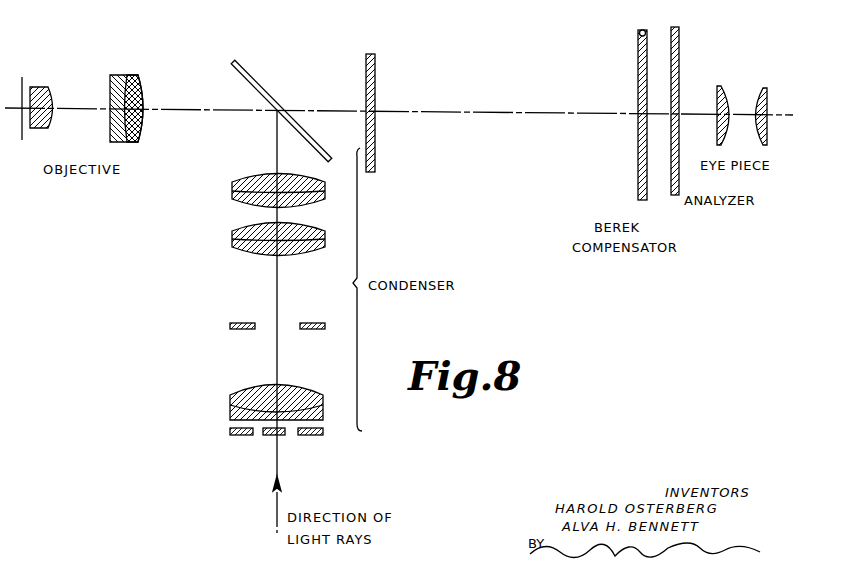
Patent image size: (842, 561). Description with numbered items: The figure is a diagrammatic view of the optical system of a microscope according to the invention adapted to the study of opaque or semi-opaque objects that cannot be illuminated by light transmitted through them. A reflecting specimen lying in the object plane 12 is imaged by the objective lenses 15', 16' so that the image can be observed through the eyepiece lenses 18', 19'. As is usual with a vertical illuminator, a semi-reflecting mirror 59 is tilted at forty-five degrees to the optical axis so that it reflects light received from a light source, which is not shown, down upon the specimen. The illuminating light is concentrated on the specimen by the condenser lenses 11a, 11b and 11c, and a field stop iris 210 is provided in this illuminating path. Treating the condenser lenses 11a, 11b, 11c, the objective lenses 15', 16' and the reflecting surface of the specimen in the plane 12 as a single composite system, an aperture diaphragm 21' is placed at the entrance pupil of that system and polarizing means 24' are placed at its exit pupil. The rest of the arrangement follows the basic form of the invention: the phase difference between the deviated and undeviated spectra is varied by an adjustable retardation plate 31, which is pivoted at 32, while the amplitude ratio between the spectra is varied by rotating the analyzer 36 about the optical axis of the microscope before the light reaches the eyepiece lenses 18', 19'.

The object plane 12 is at (22, 77).
The objective lens 15' is at (50, 96).
The objective lens 16' is at (126, 94).
The semi-reflecting mirror 59 is at (242, 70).
The polarizing means 24' is at (385, 122).
The lens 11a is at (321, 186).
The lens 11b is at (321, 229).
The field stop iris 210 is at (311, 322).
The lens 11c is at (318, 388).
The aperture diaphragm 21' is at (294, 422).
The adjustable retardation plate 31 is at (638, 190).
The pivot 32 is at (646, 31).
The analyzer 36 is at (680, 45).
The eyepiece lens 18' is at (736, 108).
The eyepiece lens 19' is at (777, 114).